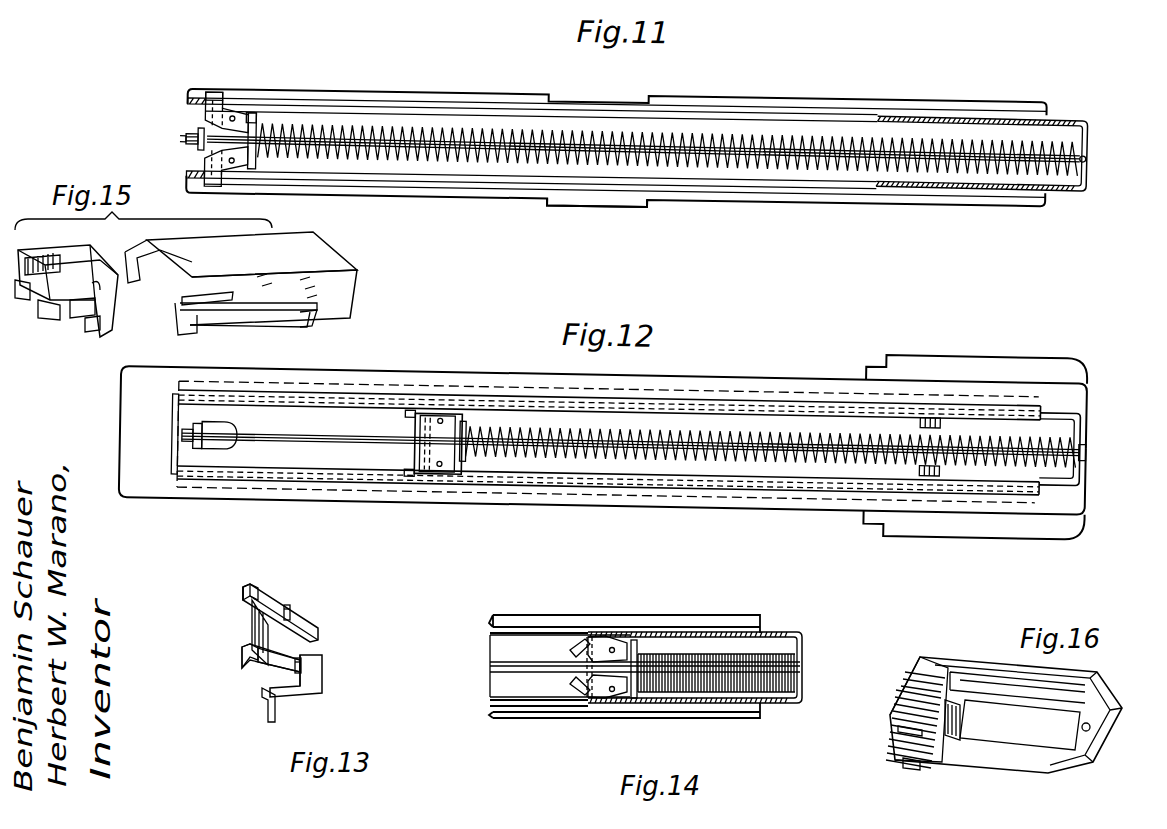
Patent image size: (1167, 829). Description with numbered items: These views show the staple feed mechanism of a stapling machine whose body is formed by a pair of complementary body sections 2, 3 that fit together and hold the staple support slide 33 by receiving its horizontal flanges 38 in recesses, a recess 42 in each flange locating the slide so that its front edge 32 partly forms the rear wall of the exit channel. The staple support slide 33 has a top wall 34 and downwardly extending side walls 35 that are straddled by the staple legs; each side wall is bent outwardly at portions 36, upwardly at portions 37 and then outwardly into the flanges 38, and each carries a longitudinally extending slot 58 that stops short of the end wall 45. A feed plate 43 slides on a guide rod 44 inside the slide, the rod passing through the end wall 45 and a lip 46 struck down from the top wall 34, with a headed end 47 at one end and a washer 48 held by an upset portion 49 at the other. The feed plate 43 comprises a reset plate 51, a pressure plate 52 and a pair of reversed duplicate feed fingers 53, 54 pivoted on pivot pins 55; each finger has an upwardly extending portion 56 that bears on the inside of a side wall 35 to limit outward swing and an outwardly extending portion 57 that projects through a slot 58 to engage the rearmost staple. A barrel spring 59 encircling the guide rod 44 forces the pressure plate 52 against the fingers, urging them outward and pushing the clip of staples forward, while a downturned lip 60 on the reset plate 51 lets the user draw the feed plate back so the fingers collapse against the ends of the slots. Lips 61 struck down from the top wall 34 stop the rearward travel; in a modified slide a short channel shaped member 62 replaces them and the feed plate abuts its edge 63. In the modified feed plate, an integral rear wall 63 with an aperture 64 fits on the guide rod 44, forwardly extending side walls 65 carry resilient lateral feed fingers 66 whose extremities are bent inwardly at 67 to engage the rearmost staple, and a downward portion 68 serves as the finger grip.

In FIG. 12, the body section 2 is at (820, 369).
In FIG. 12, the body section 3 is at (794, 492).
In FIG. 15, the front edge 32 is at (176, 312).
In FIG. 11, the staple support slide 33 is at (739, 191).
In FIG. 15, the staple support slide 33 is at (328, 270).
In FIG. 16, the top wall 34 is at (918, 697).
In FIG. 15, the side walls 35 is at (277, 312).
In FIG. 15, the outwardly bent portions 36 is at (186, 326).
In FIG. 16, the outwardly bent portions 36 is at (912, 768).
In FIG. 15, the upwardly bent portions 37 is at (238, 326).
In FIG. 11, the horizontal flanges 38 is at (708, 90).
In FIG. 12, the horizontal flanges 38 is at (350, 486).
In FIG. 14, the horizontal flanges 38 is at (497, 713).
In FIG. 16, the horizontal flanges 38 is at (993, 673).
In FIG. 11, the recess 42 is at (566, 200).
In FIG. 12, the recess 42 is at (560, 483).
In FIG. 11, the feed plate 43 is at (256, 165).
In FIG. 12, the feed plate 43 is at (437, 405).
In FIG. 14, the feed plate 43 is at (634, 669).
In FIG. 11, the guide rod 44 is at (367, 136).
In FIG. 12, the guide rod 44 is at (348, 432).
In FIG. 14, the guide rod 44 is at (500, 662).
In FIG. 11, the end wall 45 is at (1072, 174).
In FIG. 12, the end wall 45 is at (1077, 452).
In FIG. 14, the end wall 45 is at (799, 651).
In FIG. 16, the end wall 45 is at (1095, 760).
In FIG. 12, the lip 46 is at (220, 448).
In FIG. 12, the headed end 47 is at (1086, 433).
In FIG. 11, the washer 48 is at (198, 130).
In FIG. 12, the washer 48 is at (193, 442).
In FIG. 11, the upset portion 49 is at (187, 140).
In FIG. 12, the upset portion 49 is at (193, 430).
In FIG. 13, the reset plate 51 is at (316, 681).
In FIG. 11, the pressure plate 52 is at (252, 112).
In FIG. 12, the pressure plate 52 is at (466, 415).
In FIG. 11, the feed finger 53 is at (229, 170).
In FIG. 13, the feed finger 53 is at (300, 626).
In FIG. 14, the feed finger 53 is at (598, 641).
In FIG. 13, the feed finger 54 is at (310, 665).
In FIG. 11, the pivot pins 55 is at (233, 115).
In FIG. 13, the pivot pins 55 is at (288, 606).
In FIG. 14, the pivot pins 55 is at (612, 646).
In FIG. 11, the upwardly extending portion 56 is at (200, 96).
In FIG. 13, the upwardly extending portion 56 is at (244, 648).
In FIG. 14, the upwardly extending portion 56 is at (576, 685).
In FIG. 11, the outwardly extending portion 57 is at (214, 92).
In FIG. 13, the outwardly extending portion 57 is at (250, 588).
In FIG. 14, the outwardly extending portion 57 is at (588, 702).
In FIG. 15, the slot 58 is at (218, 292).
In FIG. 14, the slot 58 is at (535, 633).
In FIG. 16, the slot 58 is at (897, 729).
In FIG. 11, the barrel spring 59 is at (440, 125).
In FIG. 12, the barrel spring 59 is at (685, 436).
In FIG. 14, the barrel spring 59 is at (698, 652).
In FIG. 12, the lip 60 is at (410, 408).
In FIG. 13, the lip 60 is at (270, 713).
In FIG. 12, the lips 61 is at (926, 403).
In FIG. 16, the channel shaped member 62 is at (1013, 743).
In FIG. 15, the rear wall 63 is at (88, 263).
In FIG. 16, the rear wall 63 is at (950, 752).
In FIG. 15, the aperture 64 is at (98, 278).
In FIG. 15, the side walls 65 is at (40, 258).
In FIG. 15, the feed finger 66 is at (55, 320).
In FIG. 15, the inwardly bent extremity 67 is at (38, 300).
In FIG. 15, the downward portion 68 is at (96, 332).